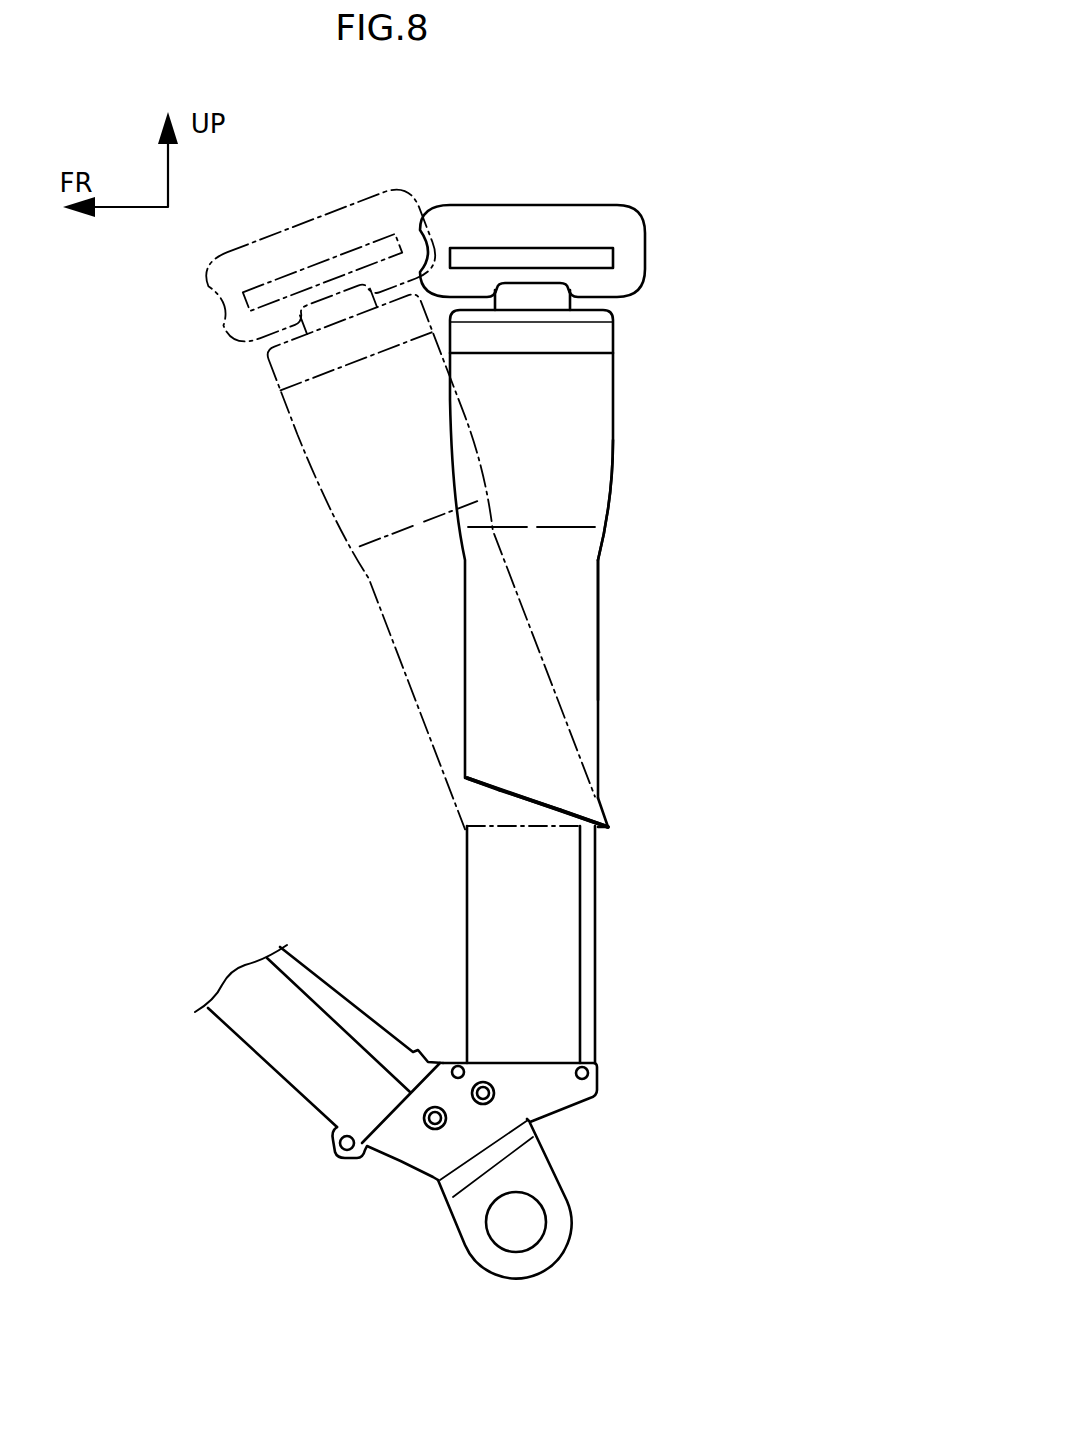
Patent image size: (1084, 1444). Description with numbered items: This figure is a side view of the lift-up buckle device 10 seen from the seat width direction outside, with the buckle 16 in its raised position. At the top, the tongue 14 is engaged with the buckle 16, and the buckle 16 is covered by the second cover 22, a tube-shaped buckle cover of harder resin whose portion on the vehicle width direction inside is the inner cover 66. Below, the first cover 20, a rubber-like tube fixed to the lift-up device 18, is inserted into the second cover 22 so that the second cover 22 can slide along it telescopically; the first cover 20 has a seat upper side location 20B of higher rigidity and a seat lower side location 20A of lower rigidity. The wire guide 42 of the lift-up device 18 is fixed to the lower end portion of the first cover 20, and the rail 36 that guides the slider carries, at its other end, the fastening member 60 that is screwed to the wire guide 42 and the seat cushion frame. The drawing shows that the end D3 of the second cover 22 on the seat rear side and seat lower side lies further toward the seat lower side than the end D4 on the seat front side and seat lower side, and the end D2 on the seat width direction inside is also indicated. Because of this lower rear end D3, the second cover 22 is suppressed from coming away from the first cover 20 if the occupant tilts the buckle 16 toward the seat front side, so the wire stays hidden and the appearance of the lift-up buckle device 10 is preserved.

The lift-up buckle device 10 is at (689, 214).
The tongue 14 is at (517, 205).
The buckle 16 is at (577, 410).
The second cover 22 is at (616, 473).
The inner cover 66 is at (585, 604).
The end of the second cover on the seat front side and seat lower side D4 is at (465, 780).
The end of the second cover on the seat width direction inside and seat lower side D2 is at (515, 797).
The end of the second cover on the seat rear side and seat lower side D3 is at (598, 828).
The seat upper side location 20B is at (467, 837).
The first cover 20 is at (600, 925).
The seat lower side location 20A is at (598, 1012).
The rail 36 is at (240, 1045).
The lift-up device 18 is at (275, 1125).
The wire guide 42 is at (533, 1098).
The fastening member 60 is at (557, 1179).